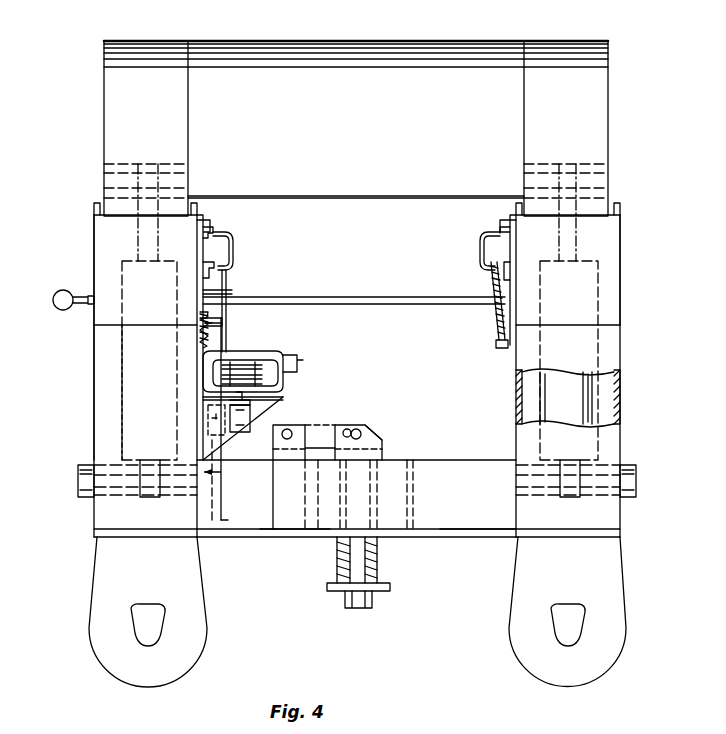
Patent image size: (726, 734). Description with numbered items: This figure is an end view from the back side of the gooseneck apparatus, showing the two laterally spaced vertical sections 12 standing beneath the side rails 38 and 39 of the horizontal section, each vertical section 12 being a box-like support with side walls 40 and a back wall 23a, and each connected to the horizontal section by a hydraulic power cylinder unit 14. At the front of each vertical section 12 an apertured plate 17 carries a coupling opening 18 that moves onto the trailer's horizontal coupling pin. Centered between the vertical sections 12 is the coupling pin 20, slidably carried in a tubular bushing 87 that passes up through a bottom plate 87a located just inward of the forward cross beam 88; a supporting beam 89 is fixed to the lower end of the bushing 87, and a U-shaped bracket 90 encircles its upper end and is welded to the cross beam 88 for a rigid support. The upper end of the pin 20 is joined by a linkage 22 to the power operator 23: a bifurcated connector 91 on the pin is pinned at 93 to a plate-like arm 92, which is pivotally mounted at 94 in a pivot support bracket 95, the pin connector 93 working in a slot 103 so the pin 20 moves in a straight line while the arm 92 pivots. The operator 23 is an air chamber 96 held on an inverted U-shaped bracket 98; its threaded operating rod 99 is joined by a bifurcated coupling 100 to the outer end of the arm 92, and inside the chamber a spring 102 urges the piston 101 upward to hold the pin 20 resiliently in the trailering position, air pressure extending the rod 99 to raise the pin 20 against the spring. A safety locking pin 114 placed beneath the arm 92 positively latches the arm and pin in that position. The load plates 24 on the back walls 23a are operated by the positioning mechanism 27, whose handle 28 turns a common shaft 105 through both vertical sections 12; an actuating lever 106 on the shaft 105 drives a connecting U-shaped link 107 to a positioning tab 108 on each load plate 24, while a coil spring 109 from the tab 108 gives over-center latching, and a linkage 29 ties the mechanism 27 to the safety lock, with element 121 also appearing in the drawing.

The vertical section 12 is at (93, 405).
The hydraulic power cylinder unit 14 is at (120, 372).
The apertured plate 17 is at (205, 644).
The coupling opening 18 is at (132, 626).
The coupling pin 20 is at (365, 609).
The linkage 22 is at (370, 421).
The power operator 23 is at (290, 375).
The back wall 23a is at (96, 427).
The load plate 24 is at (101, 235).
The mechanical positioning mechanism 27 is at (234, 258).
The handle 28 is at (58, 306).
The linkage 29 is at (234, 302).
The side rail 38 is at (104, 97).
The side rail 39 is at (610, 104).
The side wall 40 is at (516, 393).
The tubular bushing 87 is at (340, 544).
The bottom plate 87a is at (290, 538).
The cross beam 88 is at (484, 531).
The supporting beam 89 is at (391, 587).
The U-shaped bracket 90 is at (414, 494).
The bifurcated connector 91 is at (380, 462).
The plate-like arm 92 is at (326, 430).
The pivot pin connector 93 is at (363, 434).
The pivot mounting 94 is at (292, 428).
The pivot support bracket 95 is at (272, 463).
The air chamber 96 is at (241, 357).
The inverted U-shaped bracket 98 is at (240, 432).
The threaded operating rod 99 is at (240, 395).
The bifurcated coupling 100 is at (250, 410).
The piston 101 is at (216, 367).
The spring 102 is at (222, 381).
The slot 103 is at (351, 430).
The common shaft 105 is at (400, 307).
The actuating lever 106 is at (219, 289).
The connecting U-shaped link 107 is at (231, 238).
The positioning tab 108 is at (205, 215).
The coil spring 109 is at (200, 337).
The locking pin 114 is at (230, 522).
The pin 121 is at (224, 322).